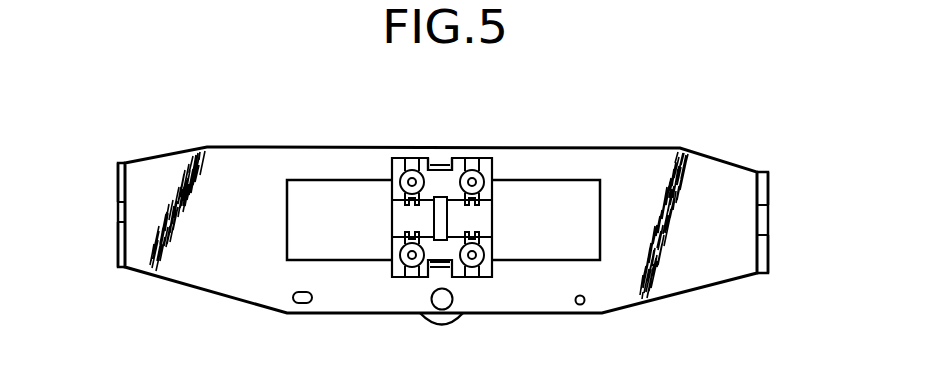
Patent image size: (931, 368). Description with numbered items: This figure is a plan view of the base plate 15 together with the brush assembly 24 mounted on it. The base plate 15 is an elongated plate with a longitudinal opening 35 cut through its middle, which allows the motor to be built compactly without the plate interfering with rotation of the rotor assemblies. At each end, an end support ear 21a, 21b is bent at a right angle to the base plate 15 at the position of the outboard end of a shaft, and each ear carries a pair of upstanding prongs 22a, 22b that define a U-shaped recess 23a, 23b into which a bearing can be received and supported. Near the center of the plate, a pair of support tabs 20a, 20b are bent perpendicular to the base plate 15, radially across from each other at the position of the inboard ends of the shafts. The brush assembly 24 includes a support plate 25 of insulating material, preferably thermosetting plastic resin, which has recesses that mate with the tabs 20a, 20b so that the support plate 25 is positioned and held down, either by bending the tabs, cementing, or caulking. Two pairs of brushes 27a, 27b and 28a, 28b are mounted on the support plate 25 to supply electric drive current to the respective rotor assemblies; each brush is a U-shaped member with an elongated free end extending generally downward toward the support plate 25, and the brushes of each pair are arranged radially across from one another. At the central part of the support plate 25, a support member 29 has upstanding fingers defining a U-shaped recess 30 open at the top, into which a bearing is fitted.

The base plate 15 is at (610, 148).
The end support ear 21a is at (127, 178).
The end support ear 21b is at (768, 183).
The upstanding prongs 22a is at (120, 202).
The upstanding prongs 22b is at (762, 205).
The U-shaped recess 23a is at (125, 214).
The U-shaped recess 23b is at (762, 235).
The longitudinal opening 35 is at (288, 219).
The support plate 25 is at (492, 223).
The support tab 20a is at (447, 165).
The support tab 20b is at (442, 266).
The brush assembly 24 is at (438, 157).
The support member 29 is at (433, 200).
The U-shaped recess 30 is at (435, 222).
The brush 27a is at (404, 161).
The brush 28a is at (472, 162).
The brush 27b is at (408, 270).
The brush 28b is at (478, 272).